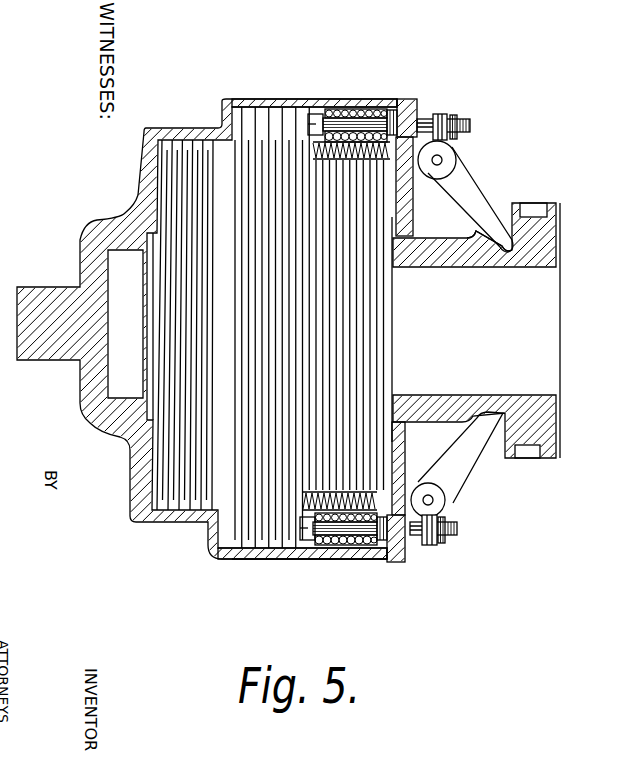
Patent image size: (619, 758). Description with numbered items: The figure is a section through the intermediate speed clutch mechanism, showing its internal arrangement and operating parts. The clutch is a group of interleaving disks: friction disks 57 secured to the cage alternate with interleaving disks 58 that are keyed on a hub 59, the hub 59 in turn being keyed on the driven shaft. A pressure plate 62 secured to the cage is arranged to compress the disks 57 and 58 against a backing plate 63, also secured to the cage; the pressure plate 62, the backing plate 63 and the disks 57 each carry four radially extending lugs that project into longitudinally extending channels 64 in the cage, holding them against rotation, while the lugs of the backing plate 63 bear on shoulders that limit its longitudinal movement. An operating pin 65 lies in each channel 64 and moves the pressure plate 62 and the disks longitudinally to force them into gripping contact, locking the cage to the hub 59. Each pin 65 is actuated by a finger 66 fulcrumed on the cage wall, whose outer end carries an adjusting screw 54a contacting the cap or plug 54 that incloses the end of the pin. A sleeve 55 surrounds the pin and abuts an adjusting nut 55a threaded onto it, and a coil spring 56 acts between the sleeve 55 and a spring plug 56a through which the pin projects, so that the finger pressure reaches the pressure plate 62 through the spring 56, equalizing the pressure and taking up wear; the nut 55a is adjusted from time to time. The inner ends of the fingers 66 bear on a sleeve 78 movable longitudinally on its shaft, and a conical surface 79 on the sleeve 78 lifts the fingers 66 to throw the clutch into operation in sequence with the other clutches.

The cap or plug 54 is at (422, 115).
The adjusting screw 54a is at (463, 116).
The sleeve 55 is at (370, 544).
The adjusting nut 55a is at (388, 554).
The coil spring 56 is at (360, 110).
The spring plug 56a is at (292, 560).
The disks 57 is at (258, 98).
The interleaving disks 58 is at (243, 158).
The hub 59 is at (393, 378).
The pressure plate 62 is at (304, 108).
The backing plate 63 is at (236, 122).
The channels 64 is at (360, 124).
The operating pin 65 is at (370, 114).
The finger 66 is at (460, 182).
The sleeve 78 is at (548, 228).
The conical surface 79 is at (478, 240).